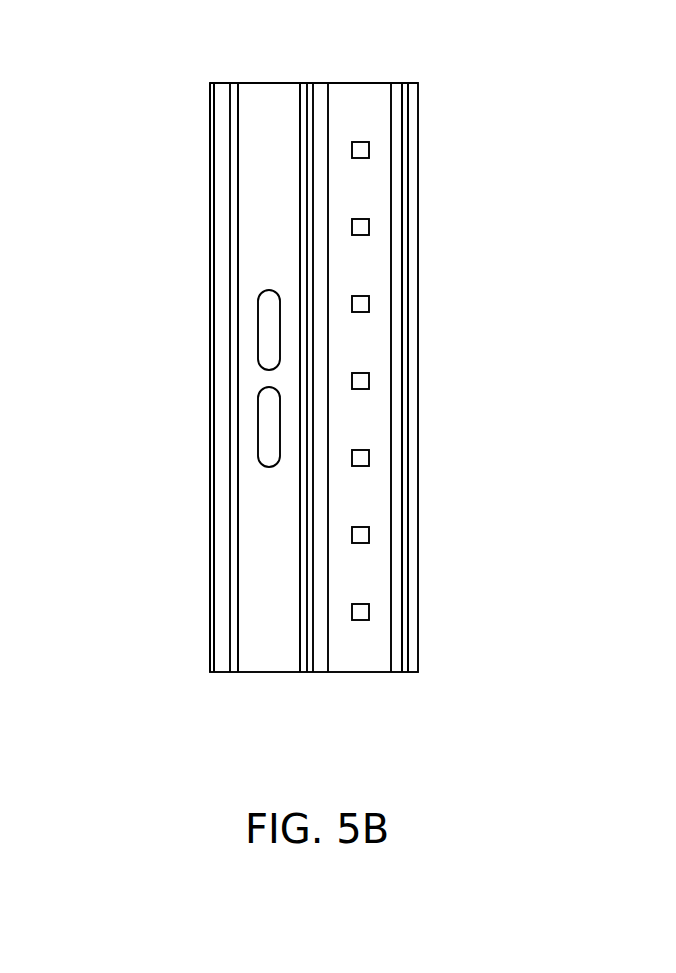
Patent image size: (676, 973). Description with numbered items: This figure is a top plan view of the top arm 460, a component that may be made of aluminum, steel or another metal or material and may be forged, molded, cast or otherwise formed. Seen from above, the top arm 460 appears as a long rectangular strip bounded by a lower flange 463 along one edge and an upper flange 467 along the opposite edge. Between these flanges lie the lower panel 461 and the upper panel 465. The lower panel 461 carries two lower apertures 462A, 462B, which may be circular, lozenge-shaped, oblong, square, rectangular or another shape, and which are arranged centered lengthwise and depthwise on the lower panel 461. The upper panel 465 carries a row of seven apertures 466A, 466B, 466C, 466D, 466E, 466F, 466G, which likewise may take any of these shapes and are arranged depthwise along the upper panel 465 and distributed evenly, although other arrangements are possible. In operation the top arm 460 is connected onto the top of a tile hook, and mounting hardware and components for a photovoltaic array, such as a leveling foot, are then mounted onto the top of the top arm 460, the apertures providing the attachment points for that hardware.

The top arm 460 is at (113, 86).
The lower panel 461 is at (258, 672).
The lower aperture 462A is at (265, 332).
The lower aperture 462B is at (265, 428).
The lower flange 463 is at (220, 672).
The upper panel 465 is at (360, 83).
The aperture 466A is at (369, 150).
The aperture 466B is at (369, 227).
The aperture 466C is at (369, 304).
The aperture 466D is at (369, 381).
The aperture 466E is at (369, 458).
The aperture 466F is at (369, 535).
The aperture 466G is at (369, 612).
The upper flange 467 is at (410, 672).